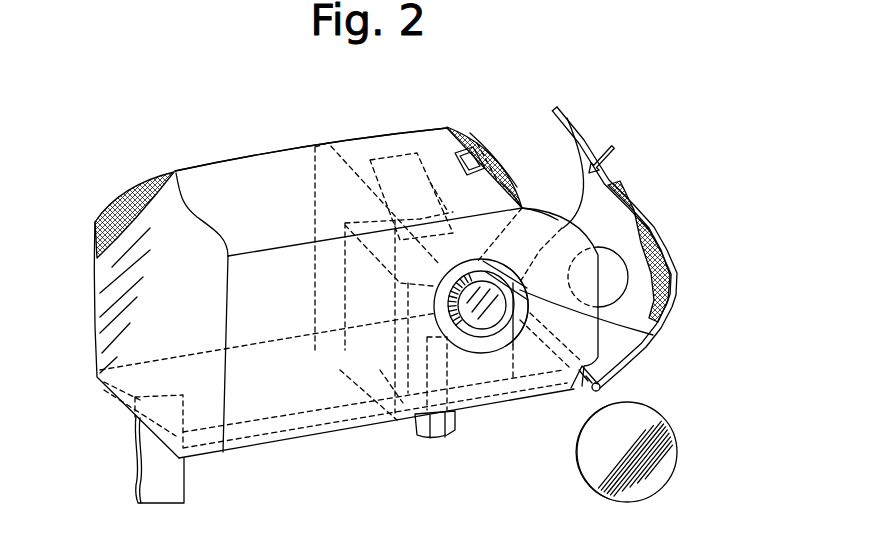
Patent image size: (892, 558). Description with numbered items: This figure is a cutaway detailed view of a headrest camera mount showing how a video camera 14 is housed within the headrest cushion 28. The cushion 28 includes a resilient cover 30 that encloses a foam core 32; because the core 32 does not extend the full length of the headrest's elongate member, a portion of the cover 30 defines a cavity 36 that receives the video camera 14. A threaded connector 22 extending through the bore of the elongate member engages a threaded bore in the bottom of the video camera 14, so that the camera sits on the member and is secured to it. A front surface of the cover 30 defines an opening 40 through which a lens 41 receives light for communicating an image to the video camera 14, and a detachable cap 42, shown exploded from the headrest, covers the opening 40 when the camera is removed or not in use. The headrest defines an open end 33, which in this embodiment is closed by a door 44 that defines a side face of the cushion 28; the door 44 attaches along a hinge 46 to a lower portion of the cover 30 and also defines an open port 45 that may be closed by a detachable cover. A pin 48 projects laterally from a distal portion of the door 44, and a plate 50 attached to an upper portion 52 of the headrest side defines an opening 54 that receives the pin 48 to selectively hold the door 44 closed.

The video camera 14 is at (357, 176).
The threaded connector 22 is at (455, 427).
The cushion 28 is at (244, 162).
The resilient cover 30 is at (117, 255).
The foam core 32 is at (110, 327).
The open end 33 is at (499, 138).
The cavity 36 is at (348, 152).
The opening 40 is at (535, 322).
The lens 41 is at (540, 285).
The detachable cap 42 is at (665, 433).
The door 44 is at (638, 193).
The open port 45 is at (620, 233).
The hinge 46 is at (600, 390).
The pin 48 is at (612, 141).
The plate 50 is at (494, 153).
The upper portion 52 is at (452, 150).
The opening 54 is at (500, 187).